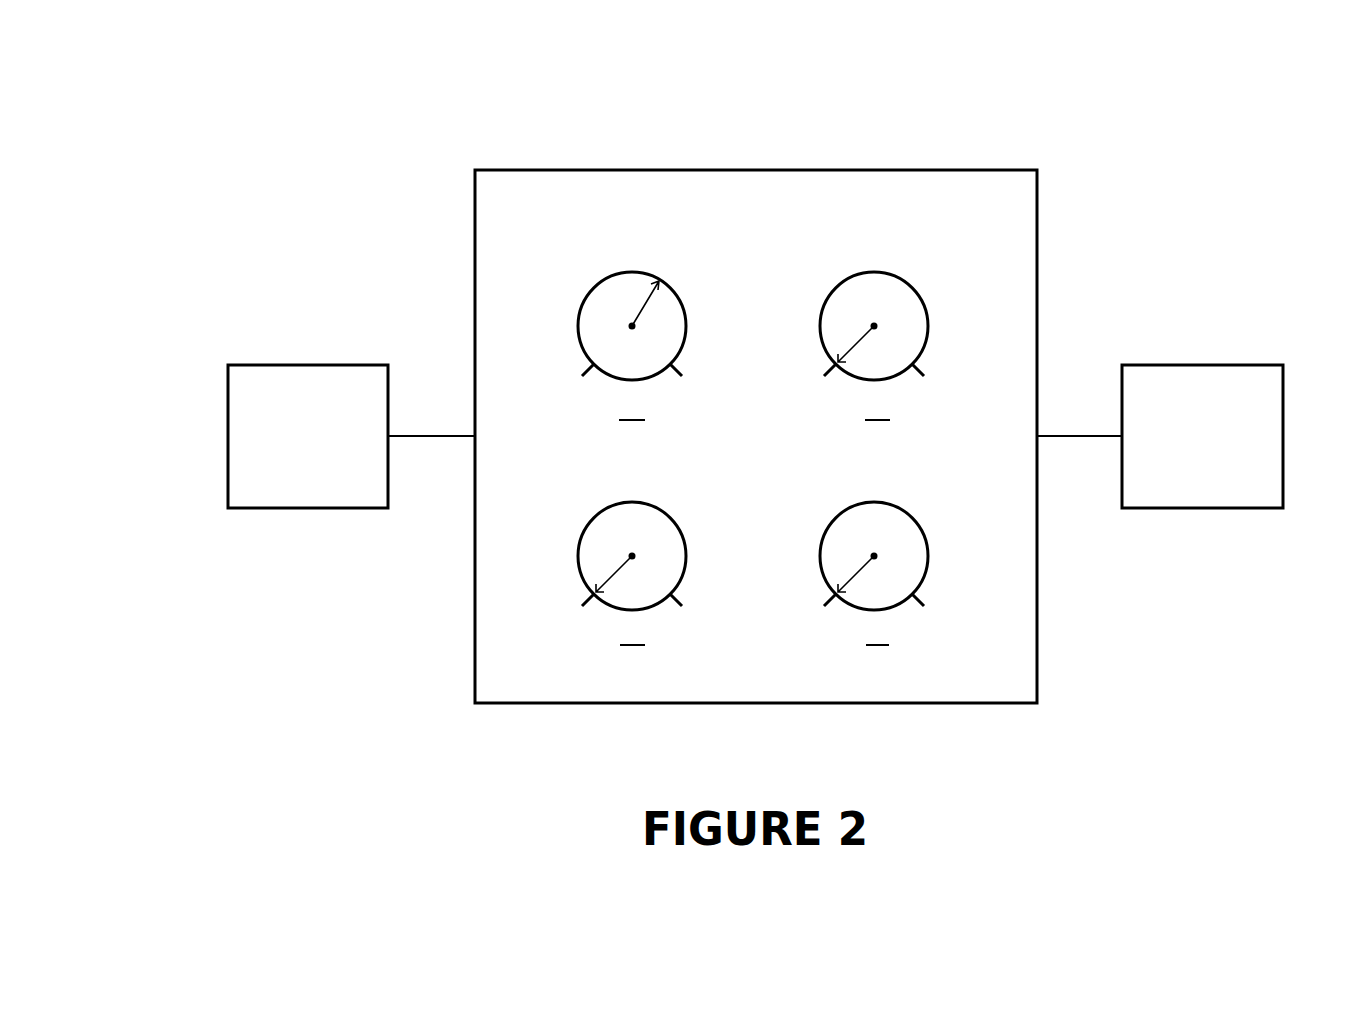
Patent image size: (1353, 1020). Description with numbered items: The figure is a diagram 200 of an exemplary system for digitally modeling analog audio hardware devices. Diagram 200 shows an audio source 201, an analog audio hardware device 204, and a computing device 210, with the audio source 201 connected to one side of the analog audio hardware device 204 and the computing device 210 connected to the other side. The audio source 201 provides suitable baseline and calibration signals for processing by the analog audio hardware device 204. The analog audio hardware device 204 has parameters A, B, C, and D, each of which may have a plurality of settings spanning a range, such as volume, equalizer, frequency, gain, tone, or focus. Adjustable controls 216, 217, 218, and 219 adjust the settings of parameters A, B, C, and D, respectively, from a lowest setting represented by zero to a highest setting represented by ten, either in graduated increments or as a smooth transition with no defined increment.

The diagram 200 is at (201, 79).
The audio source 201 is at (308, 436).
The analog audio hardware device 204 is at (756, 436).
The computing device 210 is at (1202, 436).
The adjustable control 216 is at (580, 292).
The adjustable control 217 is at (922, 292).
The adjustable control 218 is at (582, 532).
The adjustable control 219 is at (924, 522).